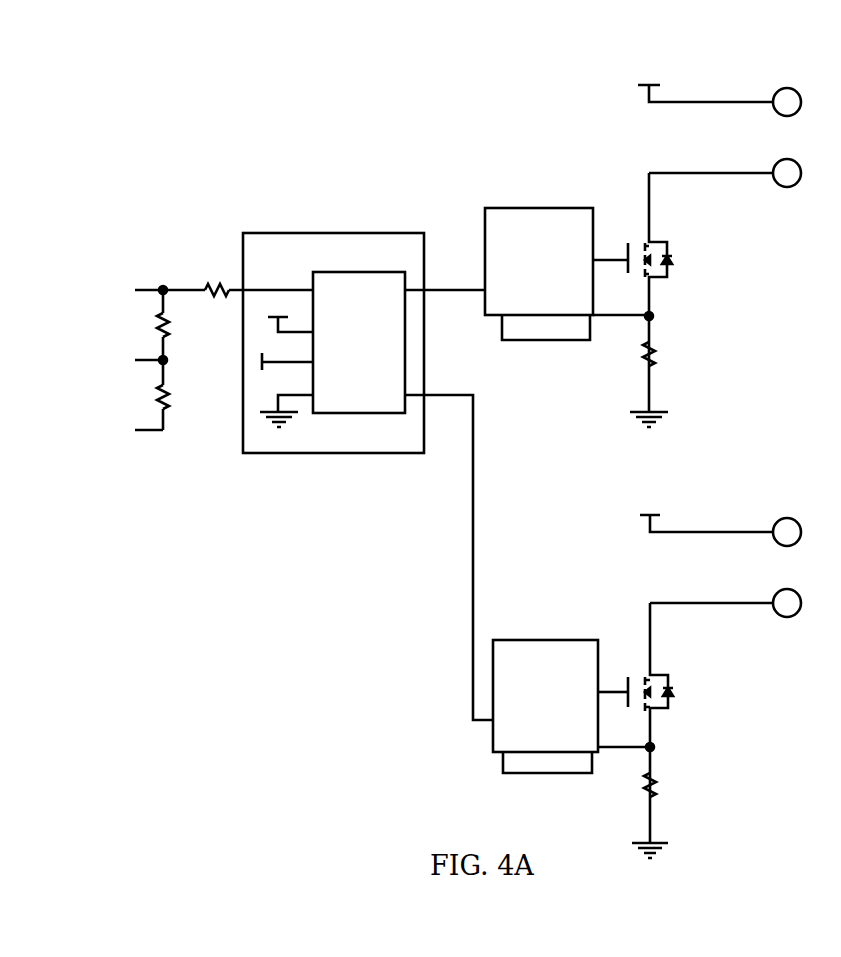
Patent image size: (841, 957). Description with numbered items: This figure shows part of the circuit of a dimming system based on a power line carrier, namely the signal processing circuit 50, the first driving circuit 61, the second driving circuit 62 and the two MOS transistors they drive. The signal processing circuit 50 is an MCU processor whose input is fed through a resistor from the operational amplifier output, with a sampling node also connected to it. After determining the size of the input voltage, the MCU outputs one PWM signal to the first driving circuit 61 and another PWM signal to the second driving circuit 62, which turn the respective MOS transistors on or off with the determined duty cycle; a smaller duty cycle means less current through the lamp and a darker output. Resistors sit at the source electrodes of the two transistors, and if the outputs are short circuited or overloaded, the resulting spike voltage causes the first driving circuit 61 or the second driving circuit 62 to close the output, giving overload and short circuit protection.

The signal processing circuit 50 is at (350, 438).
The first driving circuit 61 is at (485, 217).
The second driving circuit 62 is at (538, 762).